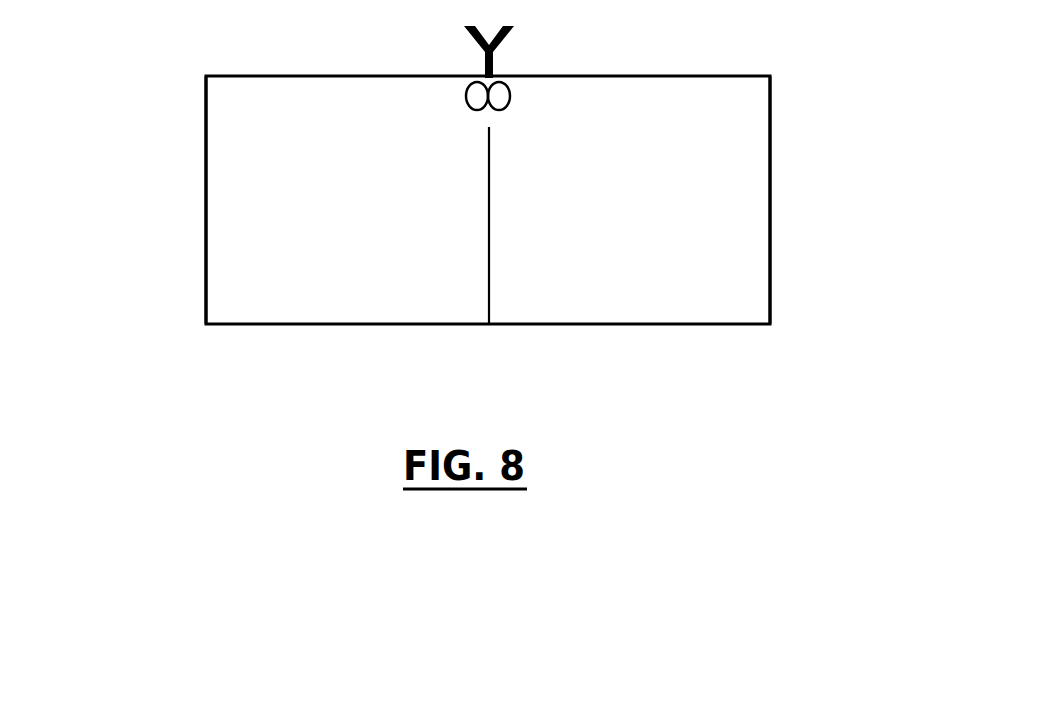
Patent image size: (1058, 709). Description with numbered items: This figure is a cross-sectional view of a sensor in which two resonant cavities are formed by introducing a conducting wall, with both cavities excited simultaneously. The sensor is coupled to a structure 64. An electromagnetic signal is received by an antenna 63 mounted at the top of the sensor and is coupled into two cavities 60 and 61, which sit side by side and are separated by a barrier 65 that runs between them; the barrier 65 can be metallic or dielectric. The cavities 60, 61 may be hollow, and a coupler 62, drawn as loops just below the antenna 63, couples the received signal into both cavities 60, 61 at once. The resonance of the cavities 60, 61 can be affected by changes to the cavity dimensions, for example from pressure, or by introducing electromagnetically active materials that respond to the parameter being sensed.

The cavity 60 is at (330, 250).
The cavity 61 is at (638, 248).
The coupler 62 is at (505, 125).
The antenna 63 is at (503, 50).
The structure 64 is at (93, 278).
The barrier 65 is at (489, 287).